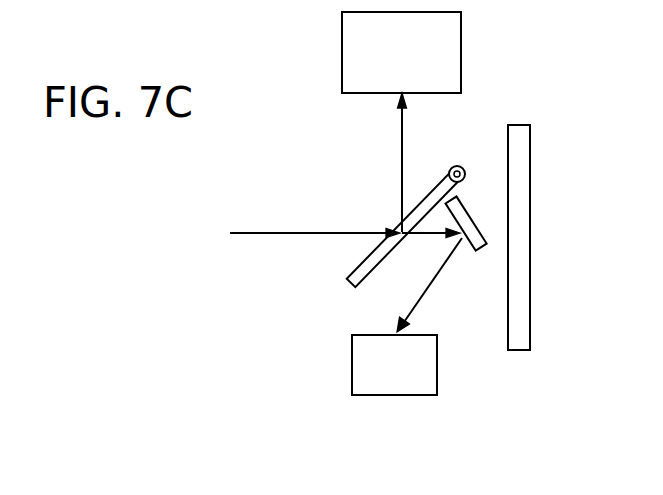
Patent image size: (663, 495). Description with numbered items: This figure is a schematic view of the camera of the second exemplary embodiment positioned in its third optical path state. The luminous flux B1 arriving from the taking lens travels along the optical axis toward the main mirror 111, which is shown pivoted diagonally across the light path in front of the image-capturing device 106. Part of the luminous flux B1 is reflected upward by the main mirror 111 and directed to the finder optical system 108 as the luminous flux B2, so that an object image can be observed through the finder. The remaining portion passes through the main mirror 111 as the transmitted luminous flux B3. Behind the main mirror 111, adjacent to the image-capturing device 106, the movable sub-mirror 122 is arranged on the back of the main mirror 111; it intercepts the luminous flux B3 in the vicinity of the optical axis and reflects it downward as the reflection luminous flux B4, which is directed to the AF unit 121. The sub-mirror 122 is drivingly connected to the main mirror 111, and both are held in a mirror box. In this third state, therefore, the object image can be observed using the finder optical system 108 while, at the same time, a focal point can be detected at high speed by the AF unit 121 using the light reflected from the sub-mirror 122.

The finder optical system 108 is at (462, 32).
The image-capturing device 106 is at (521, 125).
The main mirror 111 is at (345, 277).
The sub-mirror 122 is at (485, 232).
The AF unit 121 is at (423, 330).
The luminous flux from the taking lens B1 is at (298, 234).
The luminous flux directed to the finder optical system B2 is at (387, 162).
The luminous flux transmitted through the main mirror B3 is at (431, 246).
The reflection luminous flux from the sub-mirror B4 is at (436, 285).